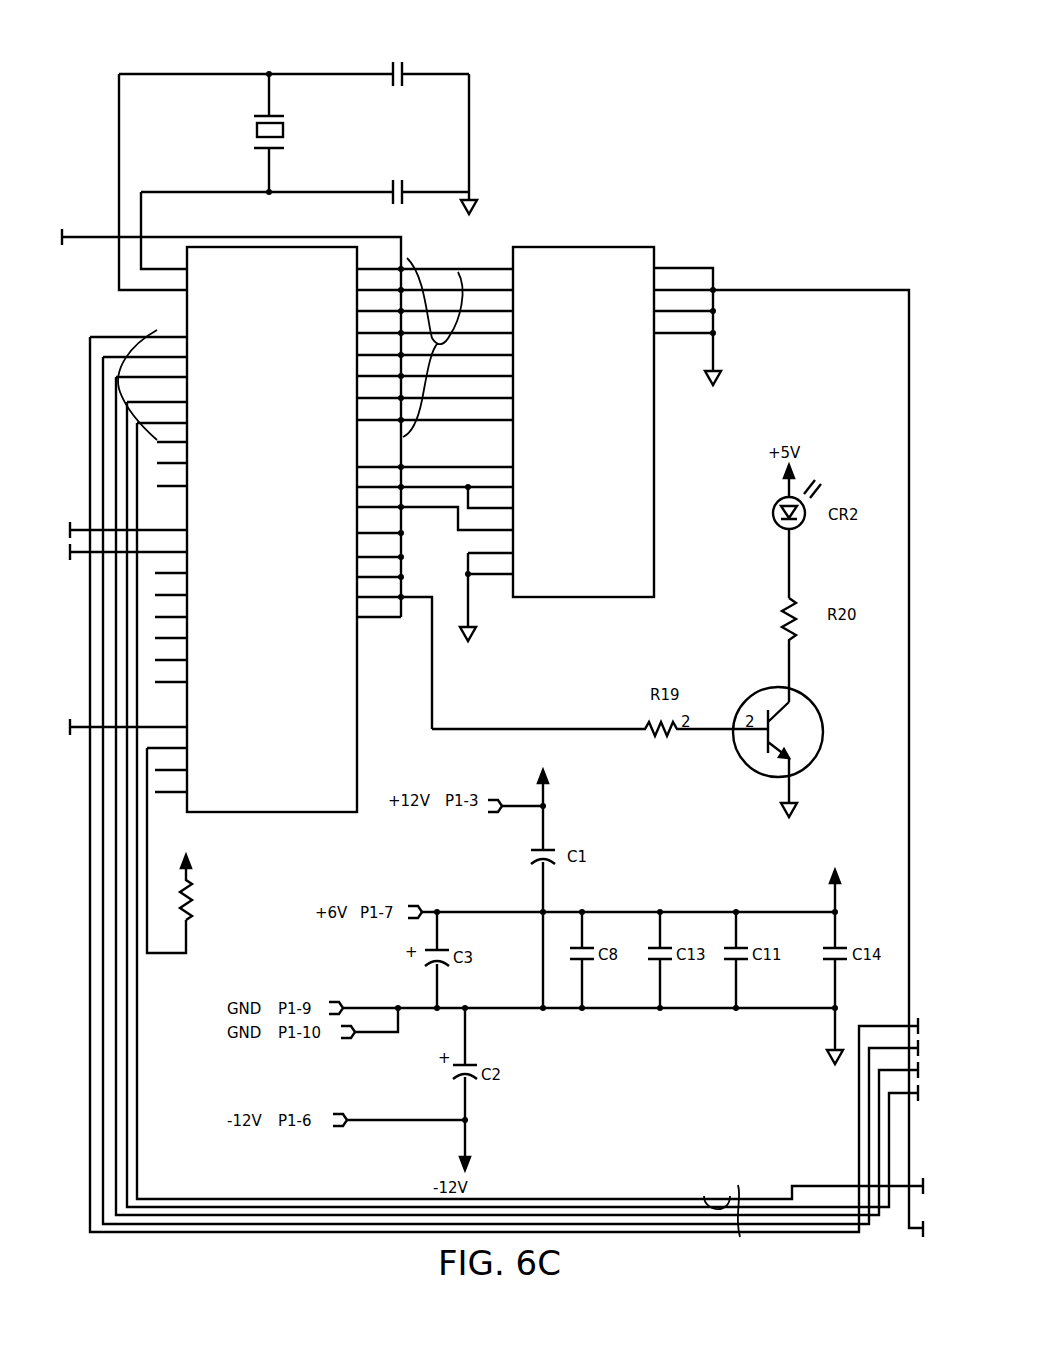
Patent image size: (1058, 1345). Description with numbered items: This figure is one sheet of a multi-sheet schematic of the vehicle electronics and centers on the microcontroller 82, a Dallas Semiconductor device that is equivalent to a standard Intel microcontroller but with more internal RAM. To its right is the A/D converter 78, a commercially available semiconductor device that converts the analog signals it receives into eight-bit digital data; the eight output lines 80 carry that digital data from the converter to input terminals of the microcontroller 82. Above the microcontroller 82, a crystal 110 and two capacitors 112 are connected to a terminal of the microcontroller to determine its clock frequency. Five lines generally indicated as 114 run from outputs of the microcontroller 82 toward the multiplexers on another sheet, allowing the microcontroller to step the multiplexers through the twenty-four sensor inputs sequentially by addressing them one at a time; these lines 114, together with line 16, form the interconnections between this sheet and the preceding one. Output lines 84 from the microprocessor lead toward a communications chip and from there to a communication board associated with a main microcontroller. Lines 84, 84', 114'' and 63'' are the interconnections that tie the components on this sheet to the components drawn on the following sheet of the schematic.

The crystal 110 is at (269, 116).
The capacitors 112 is at (405, 70).
The line 84' is at (231, 415).
The microcontroller 82 is at (357, 710).
The output lines 80 is at (458, 272).
The A/D converter 78 is at (654, 533).
The line 16 is at (848, 290).
The lines 114 is at (506, 770).
The line 114'' is at (126, 514).
The output lines 84 is at (128, 570).
The line 63'' is at (126, 713).